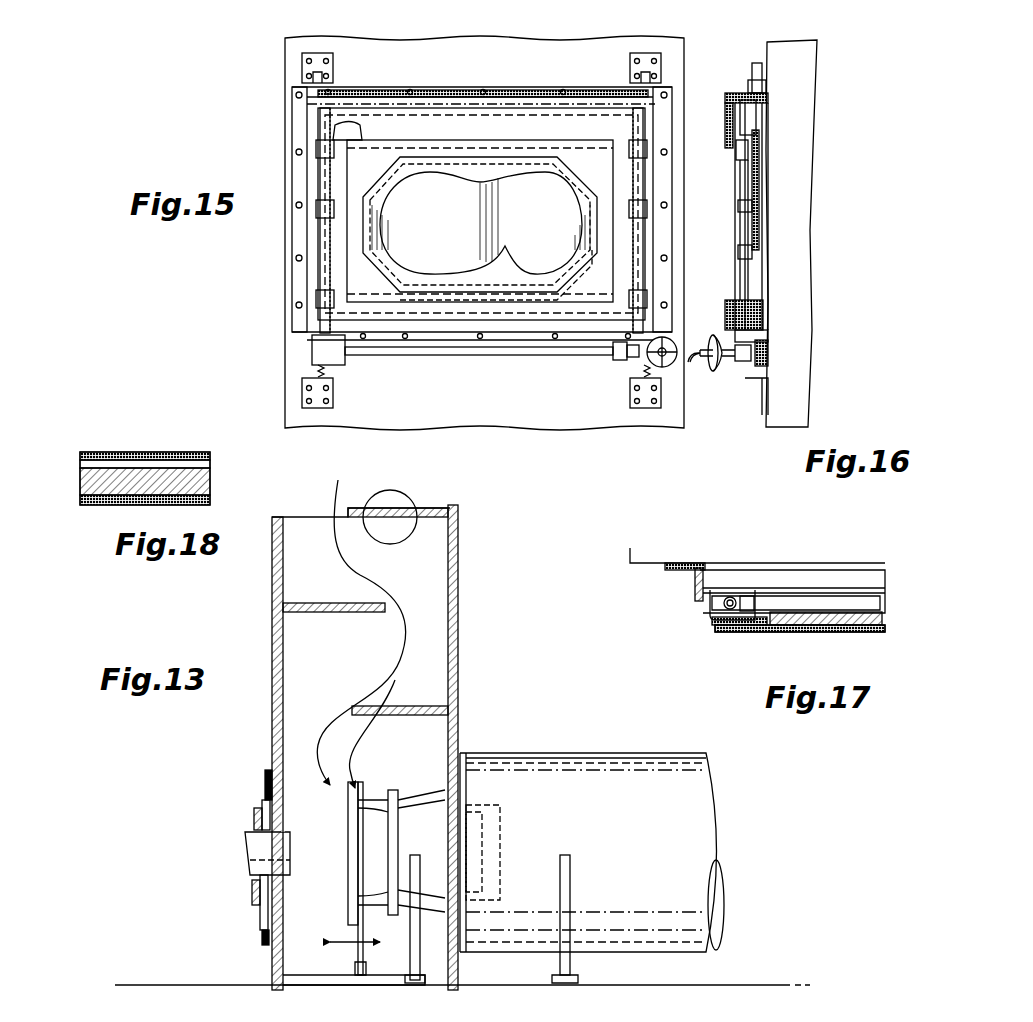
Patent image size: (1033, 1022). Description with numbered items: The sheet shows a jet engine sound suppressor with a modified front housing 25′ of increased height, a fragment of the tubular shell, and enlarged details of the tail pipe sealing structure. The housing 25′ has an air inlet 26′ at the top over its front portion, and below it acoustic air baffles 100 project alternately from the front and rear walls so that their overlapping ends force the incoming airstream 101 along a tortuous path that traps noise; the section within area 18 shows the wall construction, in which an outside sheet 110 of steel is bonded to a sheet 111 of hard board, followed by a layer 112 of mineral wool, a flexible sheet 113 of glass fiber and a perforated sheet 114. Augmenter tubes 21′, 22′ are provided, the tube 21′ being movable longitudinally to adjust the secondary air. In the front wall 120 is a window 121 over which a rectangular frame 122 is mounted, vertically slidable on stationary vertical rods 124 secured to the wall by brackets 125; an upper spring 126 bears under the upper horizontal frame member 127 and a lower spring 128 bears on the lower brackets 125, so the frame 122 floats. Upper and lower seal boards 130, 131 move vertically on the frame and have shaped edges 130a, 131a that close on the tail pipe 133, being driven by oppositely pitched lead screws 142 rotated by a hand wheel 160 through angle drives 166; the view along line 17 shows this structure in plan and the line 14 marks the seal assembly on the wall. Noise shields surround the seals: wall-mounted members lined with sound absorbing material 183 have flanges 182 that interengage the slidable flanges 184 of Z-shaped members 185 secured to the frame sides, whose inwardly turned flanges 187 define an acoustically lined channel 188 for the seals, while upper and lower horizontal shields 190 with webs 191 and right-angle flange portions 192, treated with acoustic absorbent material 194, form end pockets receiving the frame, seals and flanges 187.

In FIG. 13, the section line 14- 14 is at (219, 943).
In FIG. 15, the section line 17— 17 is at (274, 107).
In FIG. 13, the area 18 is at (412, 535).
In FIG. 13, the augmenter tube 21′ is at (378, 790).
In FIG. 13, the augmenter tube 22′ is at (420, 808).
In FIG. 13, the housing 25′ is at (458, 572).
In FIG. 13, the air inlet 26′ is at (310, 516).
In FIG. 13, the acoustic air baffles 100 is at (328, 603).
In FIG. 13, the incoming airstream 101 is at (348, 562).
In FIG. 18, the outside sheet 110 is at (160, 452).
In FIG. 18, the sheet of hard board 111 is at (195, 460).
In FIG. 18, the layer of mineral wool 112 is at (210, 474).
In FIG. 18, the flexible sheet of glass fiber 113 is at (85, 483).
In FIG. 18, the perforated sheet 114 is at (85, 500).
In FIG. 17, the front wall 120 is at (638, 566).
In FIG. 13, the front wall 120 is at (272, 665).
In FIG. 13, the window 121 is at (286, 825).
In FIG. 15, the rectangular frame 122 is at (481, 214).
In FIG. 16, the rectangular frame 122 is at (770, 100).
In FIG. 17, the rectangular frame 122 is at (755, 580).
In FIG. 13, the rectangular frame 122 is at (260, 900).
In FIG. 15, the stationary vertical rods 124 is at (642, 100).
In FIG. 16, the stationary vertical rods 124 is at (750, 205).
In FIG. 15, the brackets 125 is at (320, 55).
In FIG. 16, the brackets 125 is at (760, 418).
In FIG. 13, the brackets 125 is at (262, 782).
In FIG. 16, the upper spring 126 is at (758, 145).
In FIG. 15, the upper horizontal frame member 127 is at (500, 141).
In FIG. 16, the upper horizontal frame member 127 is at (760, 123).
In FIG. 13, the upper horizontal frame member 127 is at (262, 805).
In FIG. 16, the lower spring 128 is at (768, 353).
In FIG. 15, the upper seal board 130 is at (590, 165).
In FIG. 17, the upper seal board 130 is at (790, 600).
In FIG. 15, the seal edge 130a is at (420, 177).
In FIG. 15, the lower seal board 131 is at (590, 290).
In FIG. 15, the seal edge 131a is at (398, 255).
In FIG. 13, the tail pipe 133 is at (252, 850).
In FIG. 16, the lead screws 142 is at (760, 172).
In FIG. 15, the hand wheel 160 is at (673, 360).
In FIG. 16, the hand wheel 160 is at (720, 372).
In FIG. 15, the angle drives 166 is at (618, 360).
In FIG. 17, the flanges 182 is at (695, 590).
In FIG. 17, the sound absorbing material 183 is at (705, 575).
In FIG. 17, the flanges 184 is at (750, 578).
In FIG. 15, the Z-shaped members 185 is at (345, 122).
In FIG. 17, the Z-shaped members 185 is at (708, 615).
In FIG. 17, the inwardly turned flanges 187 is at (725, 625).
In FIG. 17, the acoustic material 188 is at (745, 632).
In FIG. 15, the horizontally disposed shields 190 is at (428, 97).
In FIG. 16, the horizontal webs 191 is at (733, 83).
In FIG. 16, the flange portions 192 is at (725, 135).
In FIG. 17, the flange portions 192 is at (778, 632).
In FIG. 17, the acoustic absorbent material 194 is at (840, 600).